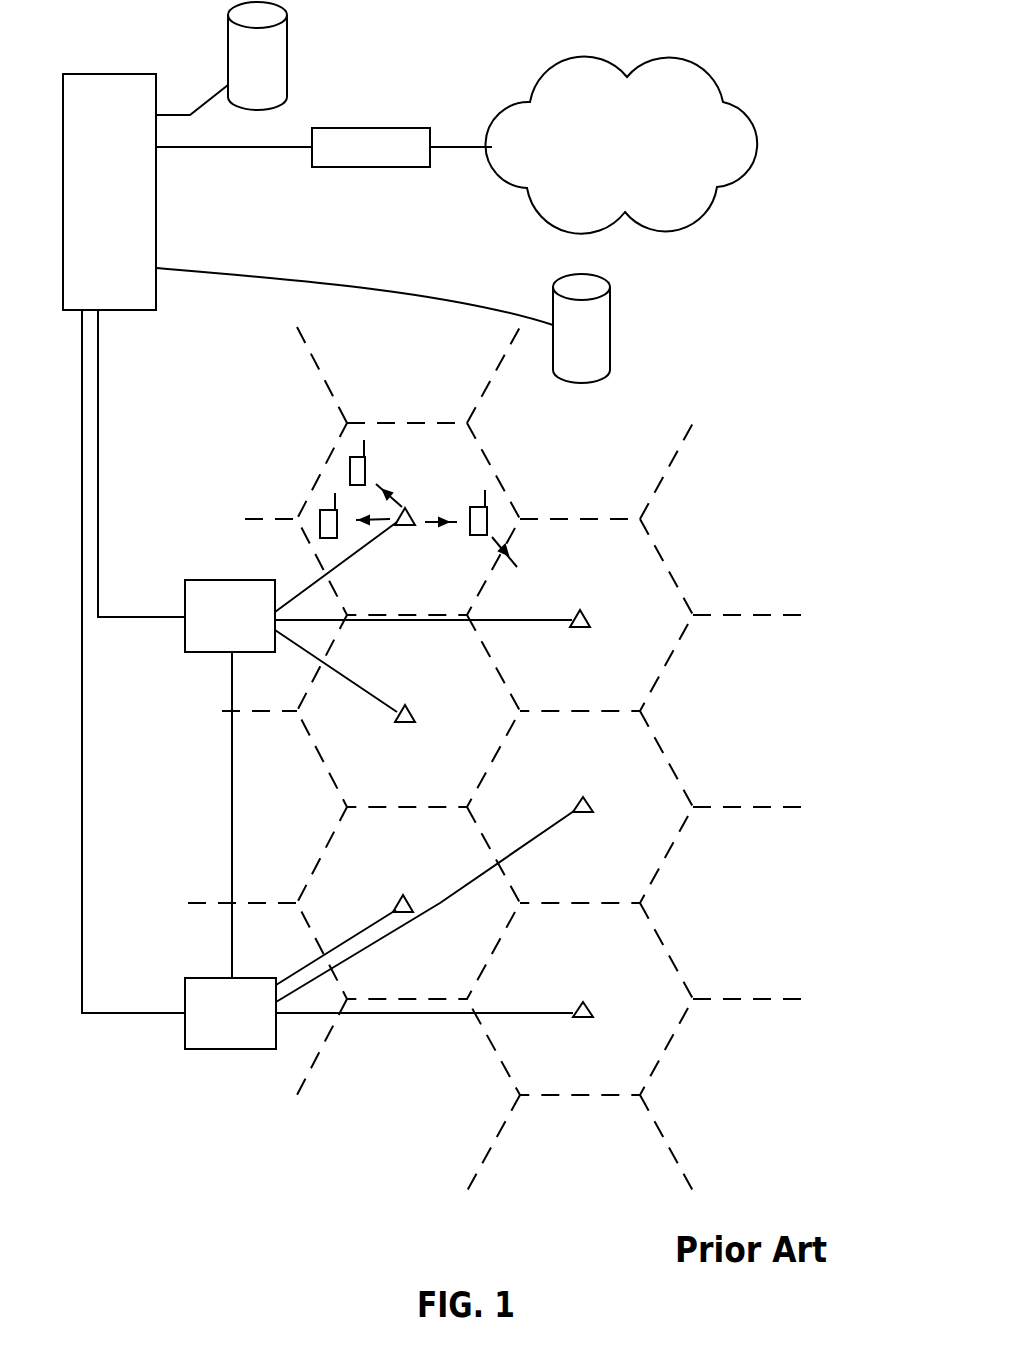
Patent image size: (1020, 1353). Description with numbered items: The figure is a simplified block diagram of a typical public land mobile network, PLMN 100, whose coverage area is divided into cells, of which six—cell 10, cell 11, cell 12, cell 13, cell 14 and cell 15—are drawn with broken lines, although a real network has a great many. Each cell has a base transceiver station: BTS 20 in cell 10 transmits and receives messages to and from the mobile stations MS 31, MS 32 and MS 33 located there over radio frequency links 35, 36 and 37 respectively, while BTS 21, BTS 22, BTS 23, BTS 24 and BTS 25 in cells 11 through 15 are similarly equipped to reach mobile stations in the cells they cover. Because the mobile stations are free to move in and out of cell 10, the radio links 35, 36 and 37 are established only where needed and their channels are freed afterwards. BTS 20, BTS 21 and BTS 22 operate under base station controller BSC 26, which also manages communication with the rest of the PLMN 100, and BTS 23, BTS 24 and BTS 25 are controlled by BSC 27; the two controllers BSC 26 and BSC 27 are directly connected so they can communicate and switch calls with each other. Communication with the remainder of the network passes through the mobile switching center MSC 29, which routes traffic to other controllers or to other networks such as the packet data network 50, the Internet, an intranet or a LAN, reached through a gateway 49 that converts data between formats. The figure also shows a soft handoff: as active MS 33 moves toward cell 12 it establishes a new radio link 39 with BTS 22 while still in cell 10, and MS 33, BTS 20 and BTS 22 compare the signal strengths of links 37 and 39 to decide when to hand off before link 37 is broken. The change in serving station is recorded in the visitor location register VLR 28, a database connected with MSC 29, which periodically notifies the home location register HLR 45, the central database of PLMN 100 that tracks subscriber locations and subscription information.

The cell 10 is at (398, 430).
The cell 11 is at (330, 745).
The cell 12 is at (660, 587).
The cell 13 is at (330, 870).
The cell 14 is at (660, 780).
The cell 15 is at (660, 972).
The base transceiver station 20 is at (412, 517).
The base transceiver station 21 is at (406, 727).
The base transceiver station 22 is at (580, 630).
The base transceiver station 23 is at (400, 897).
The base transceiver station 24 is at (588, 800).
The base transceiver station 25 is at (588, 1005).
The base station controller 26 is at (215, 580).
The base station controller 27 is at (222, 1049).
The visitor location register 28 is at (288, 40).
The mobile switching center 29 is at (113, 74).
The mobile station 31 is at (320, 537).
The mobile station 32 is at (350, 462).
The mobile station 33 is at (487, 517).
The radio frequency link 35 is at (365, 519).
The radio frequency link 36 is at (380, 487).
The radio frequency link 37 is at (442, 532).
The radio link 39 is at (513, 566).
The home location register 45 is at (610, 312).
The gateway 49 is at (390, 128).
The packet data network 50 is at (690, 63).
The public land mobile network 100 is at (248, 1202).